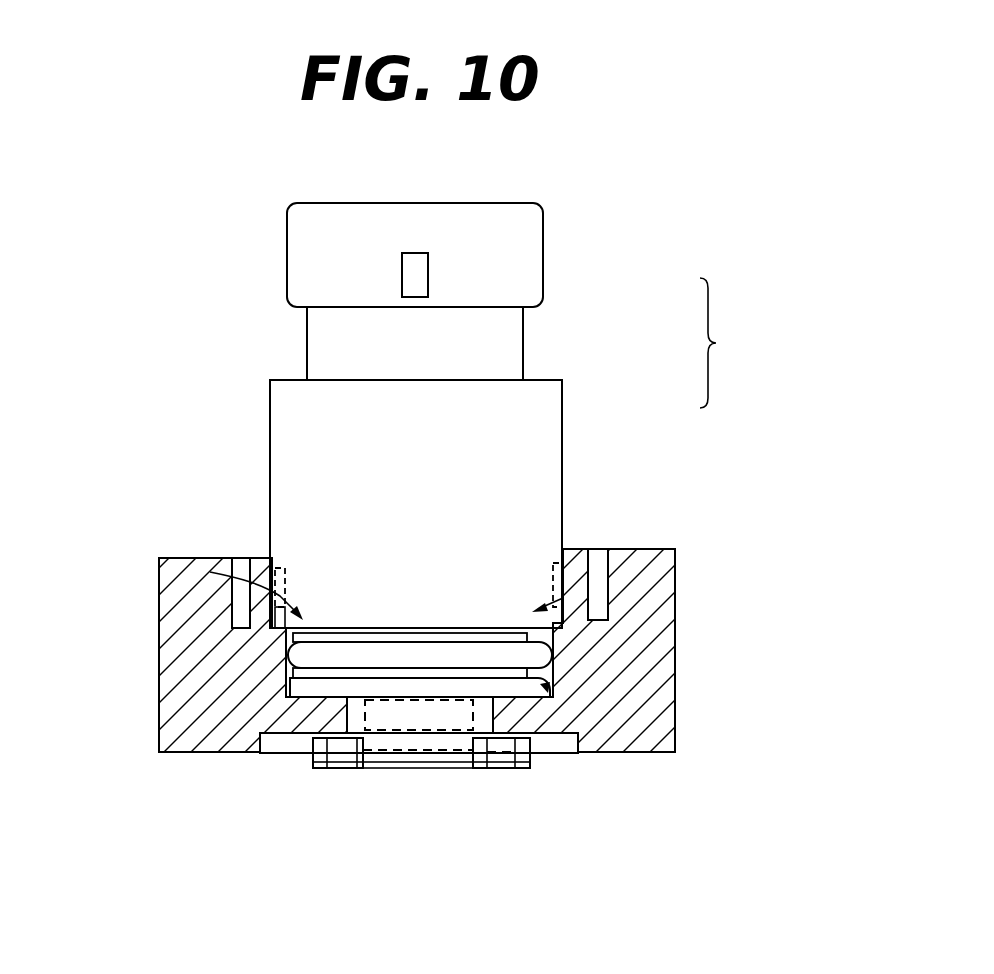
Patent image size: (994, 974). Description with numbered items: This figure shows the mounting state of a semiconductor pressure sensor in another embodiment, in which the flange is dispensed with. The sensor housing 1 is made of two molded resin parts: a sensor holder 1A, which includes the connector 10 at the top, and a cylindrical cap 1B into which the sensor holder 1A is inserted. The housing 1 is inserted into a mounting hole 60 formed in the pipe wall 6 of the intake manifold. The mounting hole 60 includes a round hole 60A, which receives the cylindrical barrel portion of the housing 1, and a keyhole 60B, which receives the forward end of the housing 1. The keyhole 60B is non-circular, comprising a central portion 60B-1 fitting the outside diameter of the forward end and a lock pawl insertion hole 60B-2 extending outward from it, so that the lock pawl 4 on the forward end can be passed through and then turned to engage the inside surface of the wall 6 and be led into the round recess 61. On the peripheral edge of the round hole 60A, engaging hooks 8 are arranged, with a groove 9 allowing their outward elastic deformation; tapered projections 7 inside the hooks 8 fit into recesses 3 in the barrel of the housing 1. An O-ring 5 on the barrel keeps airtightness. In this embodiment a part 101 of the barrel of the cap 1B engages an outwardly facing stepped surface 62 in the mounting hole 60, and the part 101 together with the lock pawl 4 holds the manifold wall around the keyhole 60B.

The connector 10 is at (483, 252).
The sensor holder 1A is at (490, 342).
The cap 1B is at (503, 432).
The sensor housing 1 is at (727, 343).
The tapered projection 7 is at (563, 598).
The recess 3 is at (578, 617).
The engaging hook 8 is at (590, 619).
The round hole 60A is at (558, 622).
The groove 9 is at (243, 603).
The pipe wall of intake manifold 6 is at (192, 678).
The mounting hole 60 is at (305, 663).
The O-ring 5 is at (213, 755).
The round recess 61 is at (285, 743).
The lock pawl 4 is at (337, 760).
The central portion 60B-1 is at (488, 768).
The lock pawl insertion hole 60B-2 is at (437, 768).
The keyhole 60B is at (580, 895).
The stepped surface 62 is at (533, 768).
The part of barrel portion of cap 101 is at (603, 745).